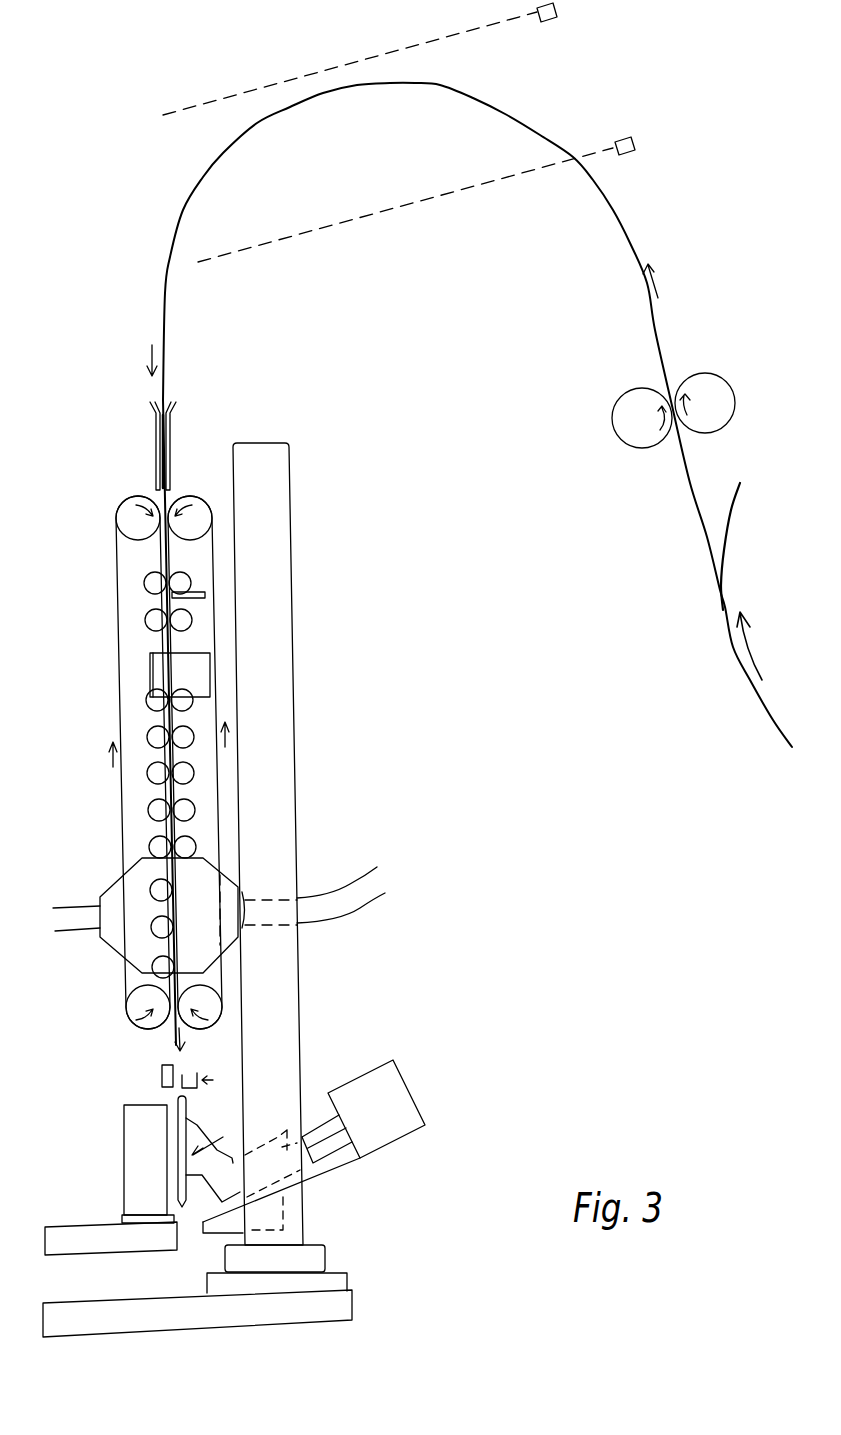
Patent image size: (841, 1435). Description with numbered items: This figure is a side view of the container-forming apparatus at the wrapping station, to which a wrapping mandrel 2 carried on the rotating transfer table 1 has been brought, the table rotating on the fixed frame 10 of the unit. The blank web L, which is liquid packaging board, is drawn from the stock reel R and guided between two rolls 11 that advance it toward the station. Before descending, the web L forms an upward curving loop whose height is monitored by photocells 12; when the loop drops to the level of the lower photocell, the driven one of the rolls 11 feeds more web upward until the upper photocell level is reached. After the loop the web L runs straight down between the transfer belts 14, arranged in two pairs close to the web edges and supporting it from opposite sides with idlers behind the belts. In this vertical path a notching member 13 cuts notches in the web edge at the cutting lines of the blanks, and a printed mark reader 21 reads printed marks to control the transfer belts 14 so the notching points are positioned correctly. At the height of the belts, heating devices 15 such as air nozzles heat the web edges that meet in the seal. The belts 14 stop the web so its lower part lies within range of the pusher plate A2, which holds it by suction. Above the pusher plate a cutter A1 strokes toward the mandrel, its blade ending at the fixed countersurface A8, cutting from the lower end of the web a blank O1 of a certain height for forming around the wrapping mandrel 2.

The blank web L is at (165, 355).
The stock reel R is at (770, 700).
The photocells 12 is at (551, 20).
The rolls 11 is at (622, 420).
The transfer belts 14 is at (160, 640).
The printed mark reader 21 is at (195, 595).
The notching member 13 is at (197, 677).
The fixed frame 10 is at (283, 627).
The heating devices 15 is at (137, 882).
The fixed countersurface A8 is at (162, 1078).
The cutter A1 is at (197, 1073).
The pusher plate A2 is at (178, 1117).
The blank O1 is at (175, 1135).
The wrapping mandrel 2 is at (137, 1172).
The transfer table 1 is at (85, 1240).